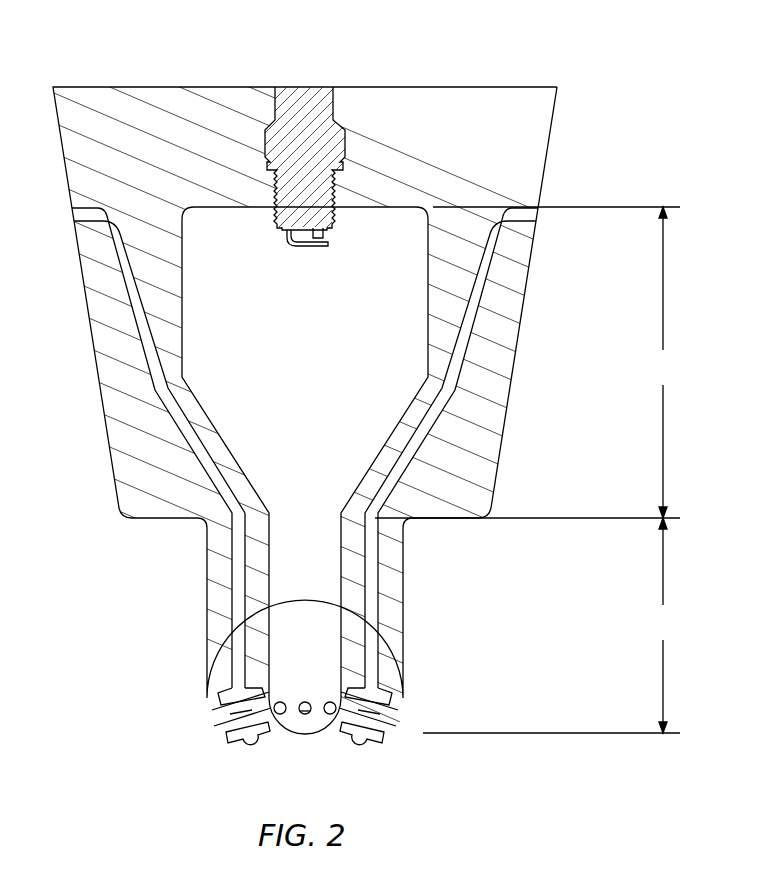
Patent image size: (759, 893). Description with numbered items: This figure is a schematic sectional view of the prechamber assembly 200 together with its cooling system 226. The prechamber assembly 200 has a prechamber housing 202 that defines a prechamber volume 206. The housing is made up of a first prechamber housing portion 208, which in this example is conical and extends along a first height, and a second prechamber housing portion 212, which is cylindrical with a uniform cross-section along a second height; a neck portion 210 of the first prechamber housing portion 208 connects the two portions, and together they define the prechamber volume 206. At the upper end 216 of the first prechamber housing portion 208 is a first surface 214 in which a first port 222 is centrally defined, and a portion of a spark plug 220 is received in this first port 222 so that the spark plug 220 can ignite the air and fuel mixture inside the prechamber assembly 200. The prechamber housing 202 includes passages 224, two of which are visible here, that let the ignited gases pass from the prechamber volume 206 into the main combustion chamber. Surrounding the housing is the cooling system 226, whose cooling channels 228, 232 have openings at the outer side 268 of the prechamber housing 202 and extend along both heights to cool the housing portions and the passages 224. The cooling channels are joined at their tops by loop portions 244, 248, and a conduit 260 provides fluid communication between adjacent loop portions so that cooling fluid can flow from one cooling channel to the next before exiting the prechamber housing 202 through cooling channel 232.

The prechamber assembly 200 is at (636, 90).
The prechamber housing 202 is at (558, 170).
The prechamber volume 206 is at (233, 330).
The first prechamber housing portion 208 is at (172, 305).
The neck portion 210 is at (248, 425).
The second prechamber housing portion 212 is at (263, 575).
The first surface 214 is at (393, 207).
The upper end 216 is at (193, 203).
The spark plug 220 is at (305, 115).
The first port 222 is at (277, 208).
The passage 224 is at (212, 720).
The cooling system 226 is at (480, 330).
The cooling channel 228 is at (495, 240).
The cooling channel 232 is at (128, 280).
The loop portion 244 is at (372, 697).
The loop portion 248 is at (212, 695).
The conduit 260 is at (360, 748).
The outer side 268 is at (508, 415).